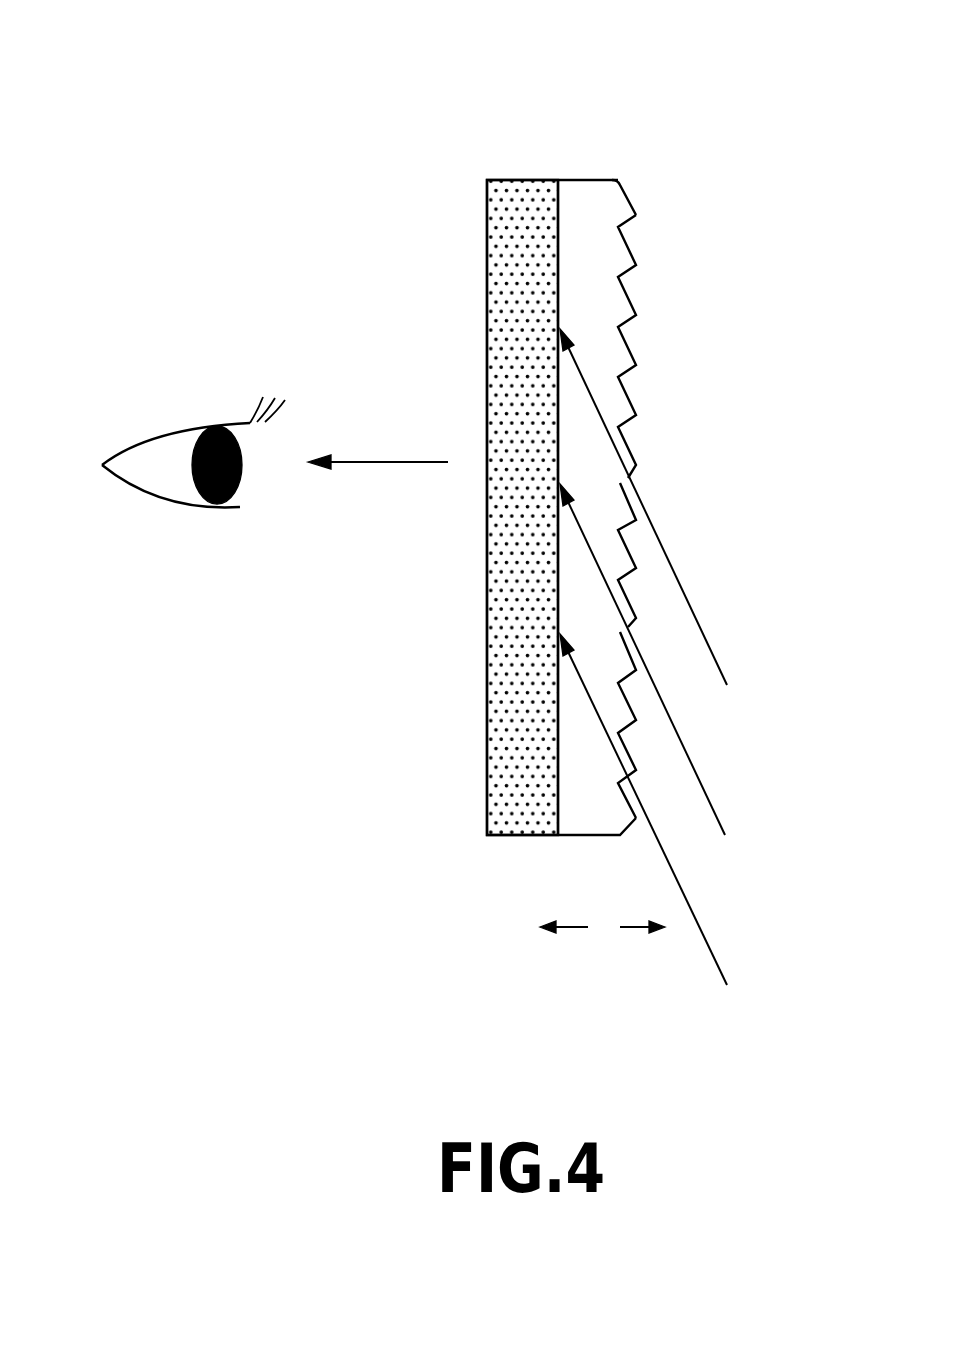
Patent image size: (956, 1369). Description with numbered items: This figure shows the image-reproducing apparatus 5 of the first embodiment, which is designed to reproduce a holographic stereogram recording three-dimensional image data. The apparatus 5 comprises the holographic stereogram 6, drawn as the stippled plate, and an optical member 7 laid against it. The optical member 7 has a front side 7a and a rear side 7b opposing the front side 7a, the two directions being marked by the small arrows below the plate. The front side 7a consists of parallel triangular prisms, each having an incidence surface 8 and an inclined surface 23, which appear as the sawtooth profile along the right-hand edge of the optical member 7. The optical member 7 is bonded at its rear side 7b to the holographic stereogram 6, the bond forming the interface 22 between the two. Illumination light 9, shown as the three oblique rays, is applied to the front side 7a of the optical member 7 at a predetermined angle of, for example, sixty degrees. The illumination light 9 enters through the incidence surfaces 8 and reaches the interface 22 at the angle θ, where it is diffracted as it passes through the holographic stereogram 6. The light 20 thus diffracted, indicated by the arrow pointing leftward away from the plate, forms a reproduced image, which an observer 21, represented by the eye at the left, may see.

The image-reproducing apparatus 5 is at (561, 33).
The holographic stereogram 6 is at (498, 217).
The optical member 7 is at (620, 208).
The front side 7a is at (646, 949).
The rear side 7b is at (565, 949).
The incidence surface 8 is at (628, 473).
The illumination light 9 is at (689, 603).
The diffracted light 20 is at (403, 462).
The observer 21 is at (160, 432).
The interface 22 is at (559, 216).
The inclined surface 23 is at (627, 347).